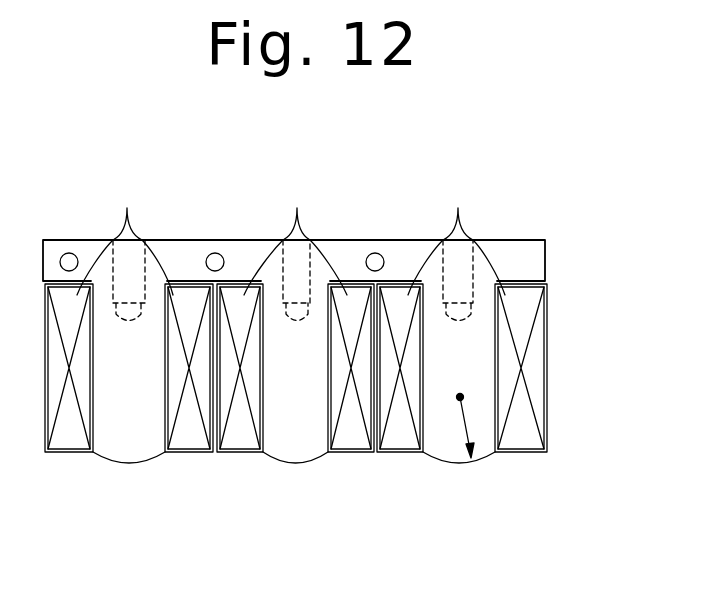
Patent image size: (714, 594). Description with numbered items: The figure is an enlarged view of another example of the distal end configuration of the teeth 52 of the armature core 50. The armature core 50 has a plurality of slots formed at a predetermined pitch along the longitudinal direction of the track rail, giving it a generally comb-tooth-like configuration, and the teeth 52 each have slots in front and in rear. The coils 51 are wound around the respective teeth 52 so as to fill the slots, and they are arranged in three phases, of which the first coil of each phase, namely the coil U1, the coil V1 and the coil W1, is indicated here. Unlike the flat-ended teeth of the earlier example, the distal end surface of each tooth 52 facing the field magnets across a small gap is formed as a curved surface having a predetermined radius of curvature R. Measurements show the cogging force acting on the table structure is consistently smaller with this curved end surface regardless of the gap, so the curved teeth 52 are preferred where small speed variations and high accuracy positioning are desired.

The armature core 50 is at (538, 210).
The coils 51 is at (198, 440).
The teeth 52 is at (133, 447).
The u1 phase coil U1 is at (128, 211).
The v1 phase coil V1 is at (298, 211).
The w1 phase coil W1 is at (459, 211).
The radius of curvature R is at (472, 426).